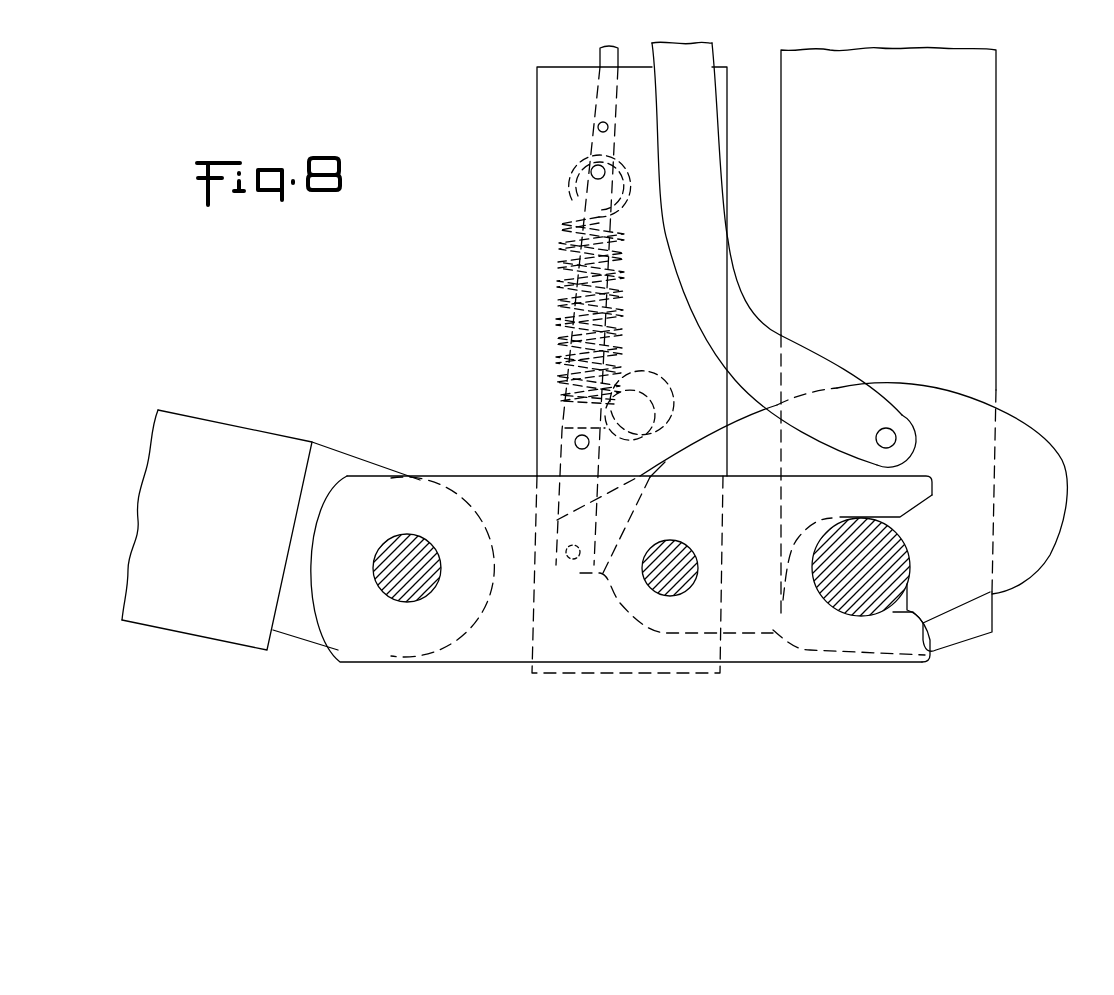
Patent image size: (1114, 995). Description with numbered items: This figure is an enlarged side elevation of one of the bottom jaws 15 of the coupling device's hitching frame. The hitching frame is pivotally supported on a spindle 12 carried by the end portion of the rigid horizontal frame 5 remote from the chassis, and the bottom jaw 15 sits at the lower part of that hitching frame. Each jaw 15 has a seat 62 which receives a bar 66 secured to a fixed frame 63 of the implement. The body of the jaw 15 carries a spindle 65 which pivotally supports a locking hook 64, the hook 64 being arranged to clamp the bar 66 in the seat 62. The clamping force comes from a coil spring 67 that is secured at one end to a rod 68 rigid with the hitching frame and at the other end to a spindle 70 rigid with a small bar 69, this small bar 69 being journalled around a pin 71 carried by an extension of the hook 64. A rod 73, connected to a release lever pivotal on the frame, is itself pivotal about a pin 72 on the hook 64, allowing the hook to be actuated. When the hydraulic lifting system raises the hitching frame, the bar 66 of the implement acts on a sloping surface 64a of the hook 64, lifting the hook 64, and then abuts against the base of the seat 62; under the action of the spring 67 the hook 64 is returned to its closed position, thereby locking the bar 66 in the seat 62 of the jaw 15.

The rigid horizontal frame 5 is at (271, 530).
The spindle 12 is at (405, 558).
The bottom jaw 15 is at (490, 648).
The seat 62 is at (820, 600).
The fixed frame 63 is at (972, 345).
The locking hook 64 is at (1027, 440).
The sloping surface 64a is at (1025, 563).
The spindle 65 is at (670, 583).
The bar 66 is at (860, 590).
The coil spring 67 is at (573, 238).
The rod 68 is at (598, 107).
The small bar 69 is at (565, 470).
The spindle 70 is at (578, 438).
The pin 71 is at (573, 560).
The pin 72 is at (886, 428).
The rod 73 is at (757, 322).